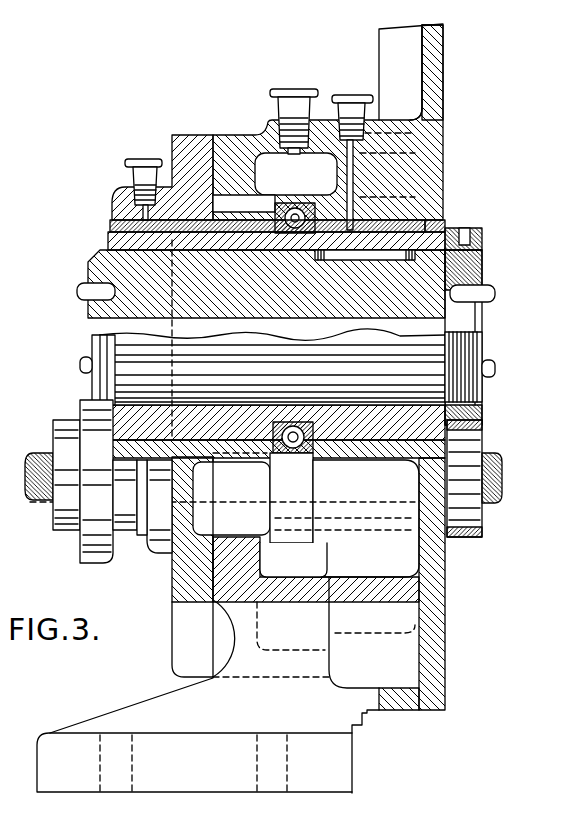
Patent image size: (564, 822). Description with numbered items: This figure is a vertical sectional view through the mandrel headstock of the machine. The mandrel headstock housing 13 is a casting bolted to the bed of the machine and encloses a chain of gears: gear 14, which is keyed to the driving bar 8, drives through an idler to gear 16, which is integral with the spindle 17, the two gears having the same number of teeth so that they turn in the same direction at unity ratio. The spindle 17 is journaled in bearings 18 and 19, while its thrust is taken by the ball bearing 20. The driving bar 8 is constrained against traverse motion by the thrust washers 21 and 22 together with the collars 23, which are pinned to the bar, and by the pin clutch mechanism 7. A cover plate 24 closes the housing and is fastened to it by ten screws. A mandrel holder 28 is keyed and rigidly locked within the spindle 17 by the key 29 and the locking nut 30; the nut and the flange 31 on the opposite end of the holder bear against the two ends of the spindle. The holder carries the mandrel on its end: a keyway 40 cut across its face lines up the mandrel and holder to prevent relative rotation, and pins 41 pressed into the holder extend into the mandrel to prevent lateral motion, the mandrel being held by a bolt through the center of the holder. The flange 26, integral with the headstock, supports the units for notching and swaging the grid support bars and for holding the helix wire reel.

The pin clutch mechanism 7 is at (80, 545).
The driving bar 8 is at (497, 465).
The mandrel headstock housing 13 is at (439, 178).
The gear 14 is at (263, 562).
The gear 16 is at (273, 193).
The spindle 17 is at (110, 230).
The bearing 18 is at (445, 230).
The bearing 19 is at (118, 218).
The ball bearing 20 is at (282, 455).
The thrust washer 21 is at (140, 532).
The thrust washer 22 is at (447, 538).
The collar 23 is at (474, 517).
The cover plate 24 is at (182, 135).
The flange 26 is at (434, 70).
The mandrel holder 28 is at (334, 327).
The key 29 is at (369, 258).
The locking nut 30 is at (482, 237).
The flange 31 is at (105, 237).
The keyway 40 is at (482, 267).
The pins 41 is at (495, 291).